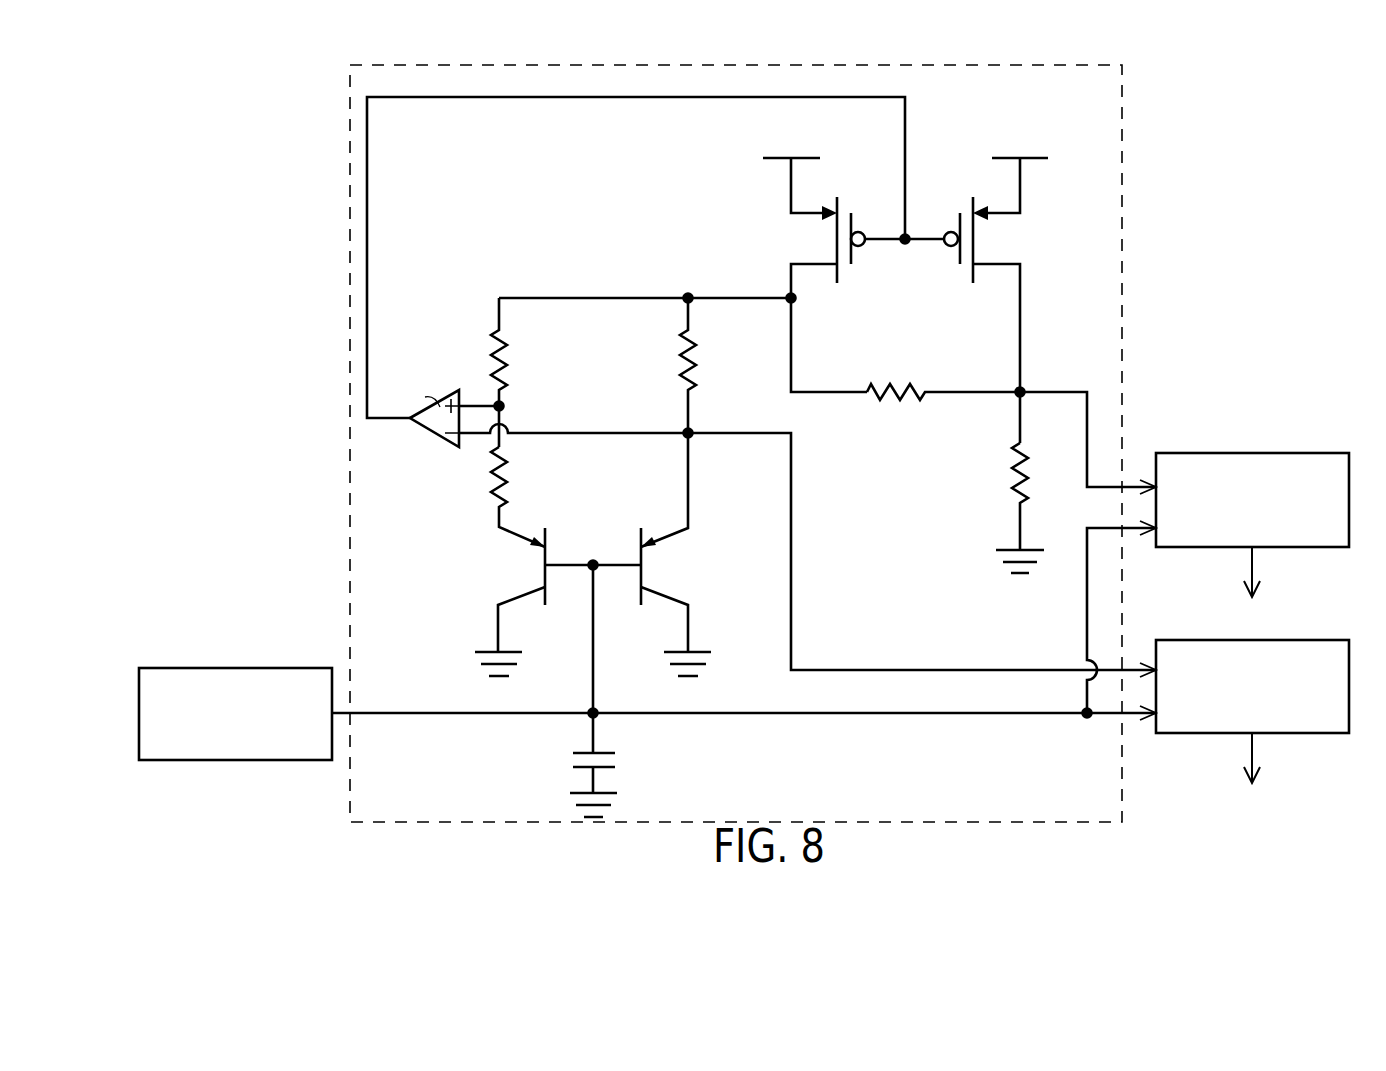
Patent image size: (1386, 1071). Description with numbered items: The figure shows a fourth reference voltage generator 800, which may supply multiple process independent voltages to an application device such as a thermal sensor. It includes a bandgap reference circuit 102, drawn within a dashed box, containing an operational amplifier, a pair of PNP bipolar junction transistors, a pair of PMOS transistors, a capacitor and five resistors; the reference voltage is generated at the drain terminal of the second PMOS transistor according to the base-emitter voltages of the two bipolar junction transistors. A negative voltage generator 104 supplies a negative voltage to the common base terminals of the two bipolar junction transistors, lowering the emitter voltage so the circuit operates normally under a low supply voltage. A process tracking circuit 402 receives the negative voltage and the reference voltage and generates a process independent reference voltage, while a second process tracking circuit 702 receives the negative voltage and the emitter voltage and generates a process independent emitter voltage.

The reference voltage generator 800 is at (252, 98).
The bandgap reference circuit 102 is at (1122, 105).
The negative voltage generator 104 is at (197, 668).
The process tracking circuit 402 is at (1195, 453).
The process tracking circuit 702 is at (1195, 640).